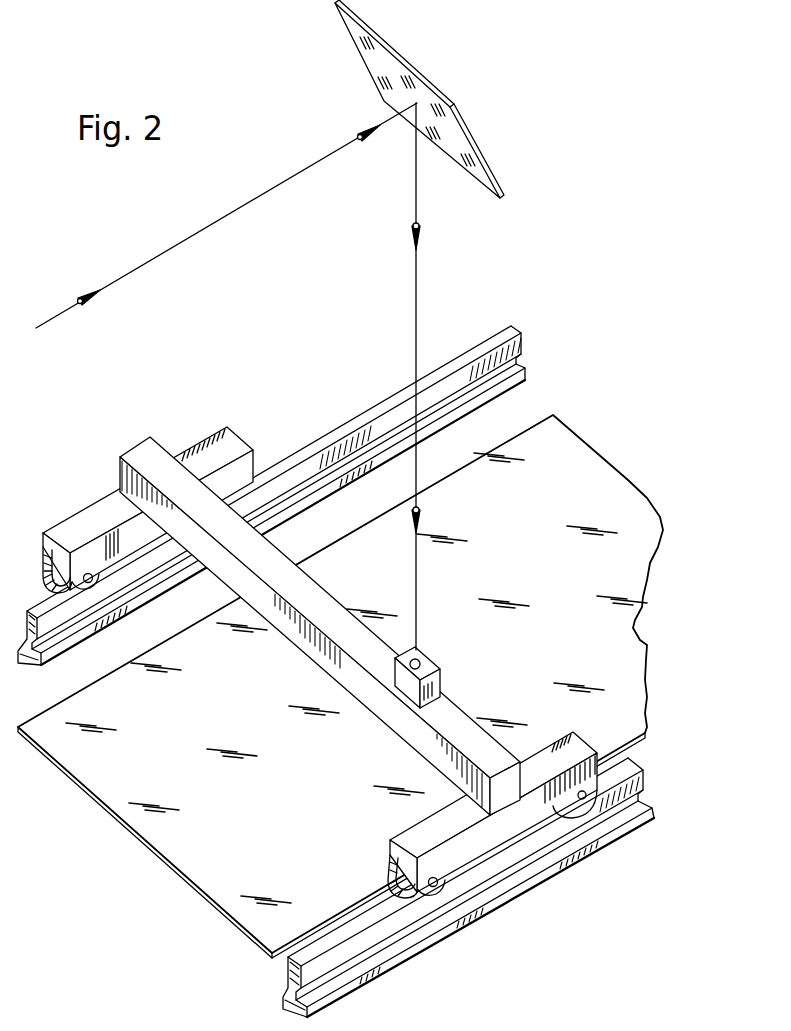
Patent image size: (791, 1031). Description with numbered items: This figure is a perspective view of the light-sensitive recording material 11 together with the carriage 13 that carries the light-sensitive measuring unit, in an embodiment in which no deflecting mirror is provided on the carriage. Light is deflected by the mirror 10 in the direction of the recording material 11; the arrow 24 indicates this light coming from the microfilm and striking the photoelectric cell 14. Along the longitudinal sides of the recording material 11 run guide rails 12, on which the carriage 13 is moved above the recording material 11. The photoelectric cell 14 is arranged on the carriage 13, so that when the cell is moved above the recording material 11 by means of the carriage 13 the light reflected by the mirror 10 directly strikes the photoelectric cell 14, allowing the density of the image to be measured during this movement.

The mirror 10 is at (375, 63).
The light-sensitive recording material 11 is at (118, 785).
The guide rails 12 is at (360, 427).
The carriage 13 is at (337, 585).
The photoelectric cell 14 is at (433, 660).
The light coming from the microfilm 24 is at (418, 280).